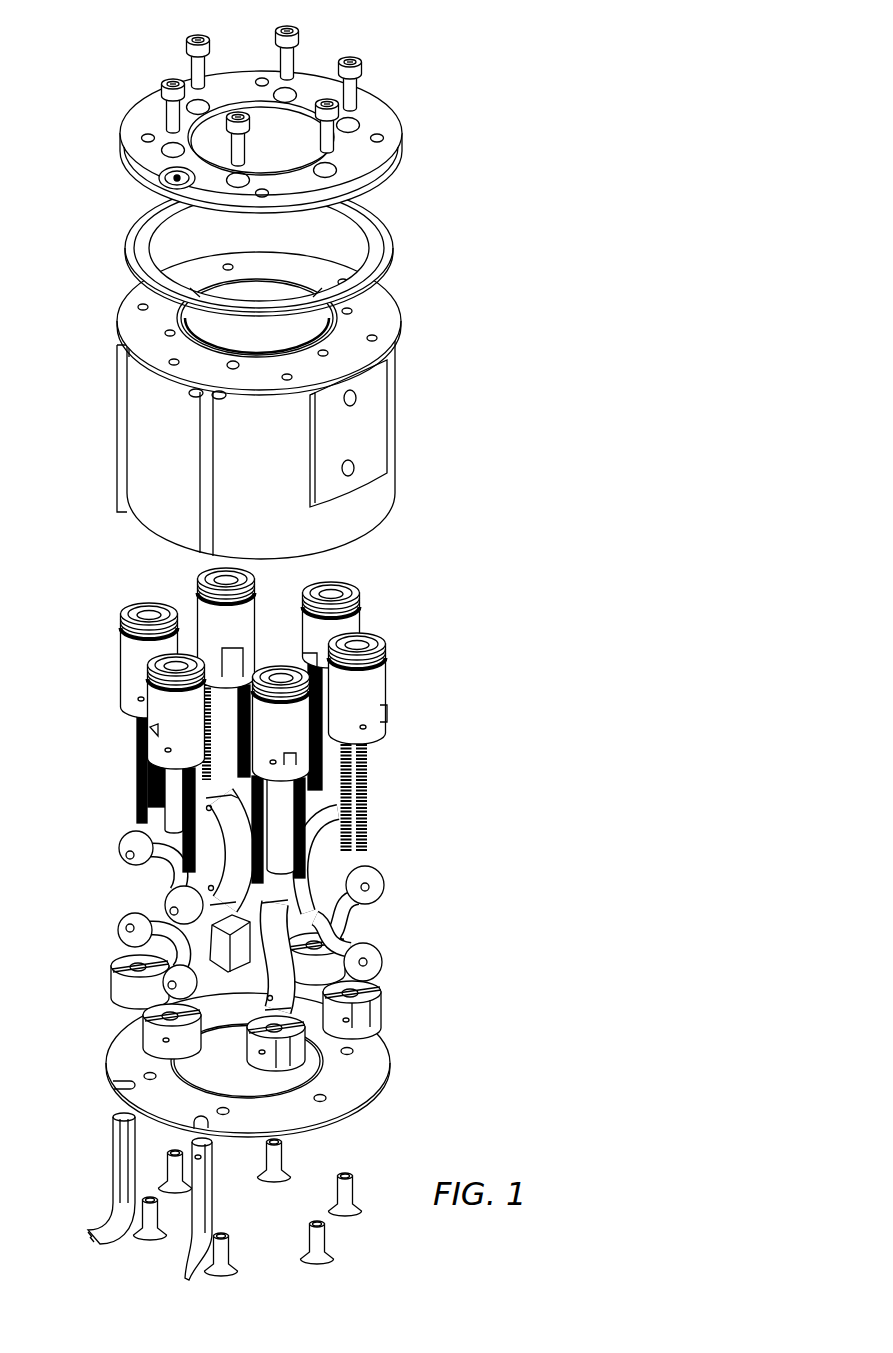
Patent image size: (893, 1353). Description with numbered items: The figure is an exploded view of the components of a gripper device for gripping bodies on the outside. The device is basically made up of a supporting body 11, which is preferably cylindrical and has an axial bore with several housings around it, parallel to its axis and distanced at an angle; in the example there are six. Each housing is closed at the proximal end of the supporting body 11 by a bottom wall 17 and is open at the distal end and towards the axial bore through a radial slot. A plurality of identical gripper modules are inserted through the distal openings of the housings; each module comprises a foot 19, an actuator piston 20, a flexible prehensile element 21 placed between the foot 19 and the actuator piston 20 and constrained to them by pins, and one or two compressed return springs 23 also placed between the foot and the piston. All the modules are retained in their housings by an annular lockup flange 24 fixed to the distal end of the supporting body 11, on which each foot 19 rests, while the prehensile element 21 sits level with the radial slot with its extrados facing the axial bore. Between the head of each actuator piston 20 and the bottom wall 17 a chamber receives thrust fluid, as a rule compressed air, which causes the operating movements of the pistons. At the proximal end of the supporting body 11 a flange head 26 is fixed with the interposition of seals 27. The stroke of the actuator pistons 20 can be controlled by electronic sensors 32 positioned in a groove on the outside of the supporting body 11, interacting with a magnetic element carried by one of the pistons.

The flange head 26 is at (403, 167).
The seals 27 is at (392, 248).
The bottom wall 17 is at (382, 317).
The supporting body 11 is at (397, 445).
The actuator piston 20 is at (382, 685).
The compressed return springs 23 is at (367, 787).
The flexible prehensile element 21 is at (373, 923).
The foot 19 is at (370, 1024).
The annular lockup flange 24 is at (360, 1088).
The electronic sensors 32 is at (190, 1195).